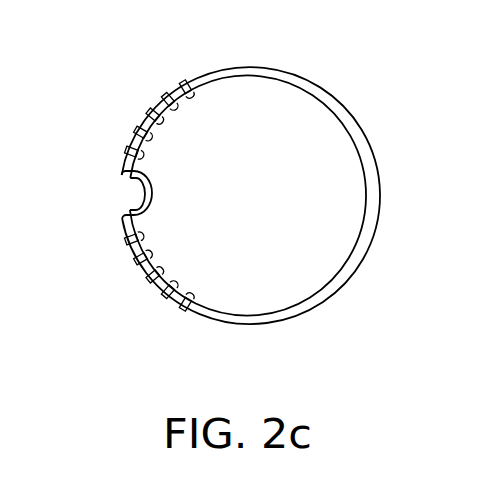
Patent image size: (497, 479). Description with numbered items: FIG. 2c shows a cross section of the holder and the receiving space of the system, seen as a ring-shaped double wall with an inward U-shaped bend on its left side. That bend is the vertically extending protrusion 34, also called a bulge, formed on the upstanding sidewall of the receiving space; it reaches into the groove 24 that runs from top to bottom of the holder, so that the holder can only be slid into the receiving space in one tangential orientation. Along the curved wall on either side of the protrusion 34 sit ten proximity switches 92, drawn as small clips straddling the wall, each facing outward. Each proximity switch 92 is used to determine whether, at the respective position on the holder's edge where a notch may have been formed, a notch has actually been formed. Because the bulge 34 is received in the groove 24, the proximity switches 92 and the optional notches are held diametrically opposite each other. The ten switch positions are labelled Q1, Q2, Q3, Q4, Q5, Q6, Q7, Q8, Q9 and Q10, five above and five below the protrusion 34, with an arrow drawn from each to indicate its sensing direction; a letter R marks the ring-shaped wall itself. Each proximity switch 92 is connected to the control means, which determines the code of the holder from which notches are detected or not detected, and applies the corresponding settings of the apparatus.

The ring / radius R is at (203, 195).
The groove 24 is at (155, 203).
The protrusion 34 is at (132, 194).
The proximity switch 92 is at (187, 309).
The clip position 1 Q1 is at (182, 80).
The clip position 2 Q2 is at (148, 76).
The clip position 3 Q3 is at (147, 110).
The clip position 4 Q4 is at (114, 117).
The clip position 5 Q5 is at (124, 149).
The clip position 6 Q6 is at (124, 242).
The clip position 7 Q7 is at (114, 274).
The clip position 8 Q8 is at (129, 296).
The clip position 9 Q9 is at (148, 315).
The clip position 10 Q10 is at (198, 337).